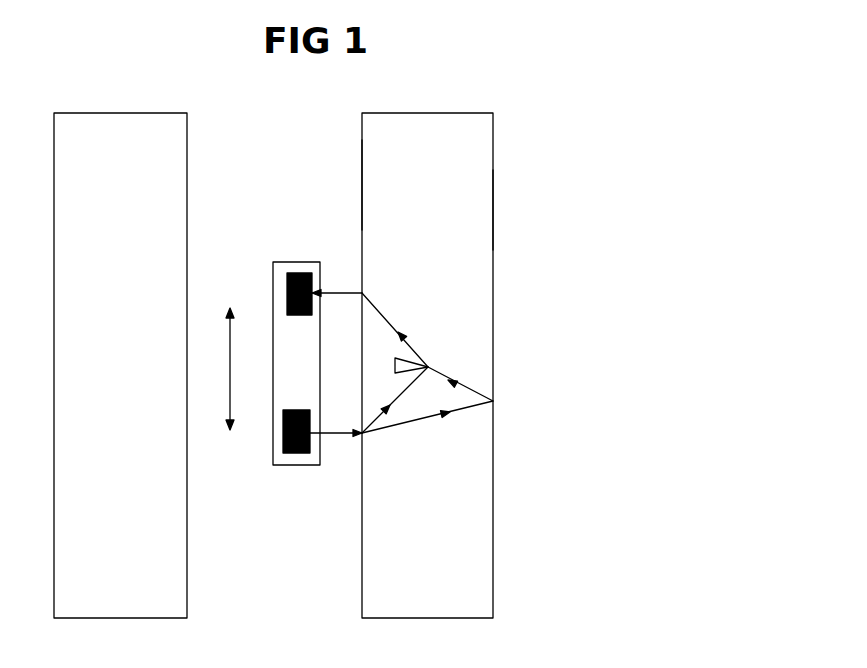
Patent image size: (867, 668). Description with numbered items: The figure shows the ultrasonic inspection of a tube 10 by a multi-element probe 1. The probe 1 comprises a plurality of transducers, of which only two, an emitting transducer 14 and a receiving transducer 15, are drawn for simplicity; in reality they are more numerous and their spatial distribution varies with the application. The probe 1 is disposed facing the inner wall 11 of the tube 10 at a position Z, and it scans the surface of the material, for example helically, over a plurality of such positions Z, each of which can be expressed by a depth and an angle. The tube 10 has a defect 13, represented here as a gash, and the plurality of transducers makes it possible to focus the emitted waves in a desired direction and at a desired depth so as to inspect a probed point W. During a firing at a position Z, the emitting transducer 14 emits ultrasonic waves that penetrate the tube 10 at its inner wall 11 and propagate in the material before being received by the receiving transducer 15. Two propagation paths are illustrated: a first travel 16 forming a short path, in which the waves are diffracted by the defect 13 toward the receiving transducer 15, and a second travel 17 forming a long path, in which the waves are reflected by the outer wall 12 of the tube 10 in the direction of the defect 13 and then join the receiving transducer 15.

The multi-element probe 1 is at (273, 262).
The tube 10 is at (468, 113).
The inner wall 11 is at (358, 178).
The outer wall 12 is at (496, 206).
The defect 13 is at (412, 360).
The emitting transducer 14 is at (297, 453).
The receiving transducer 15 is at (300, 273).
The first travel 16 is at (387, 407).
The second travel 17 is at (468, 388).
The probed point W is at (432, 355).
The position Z is at (358, 365).